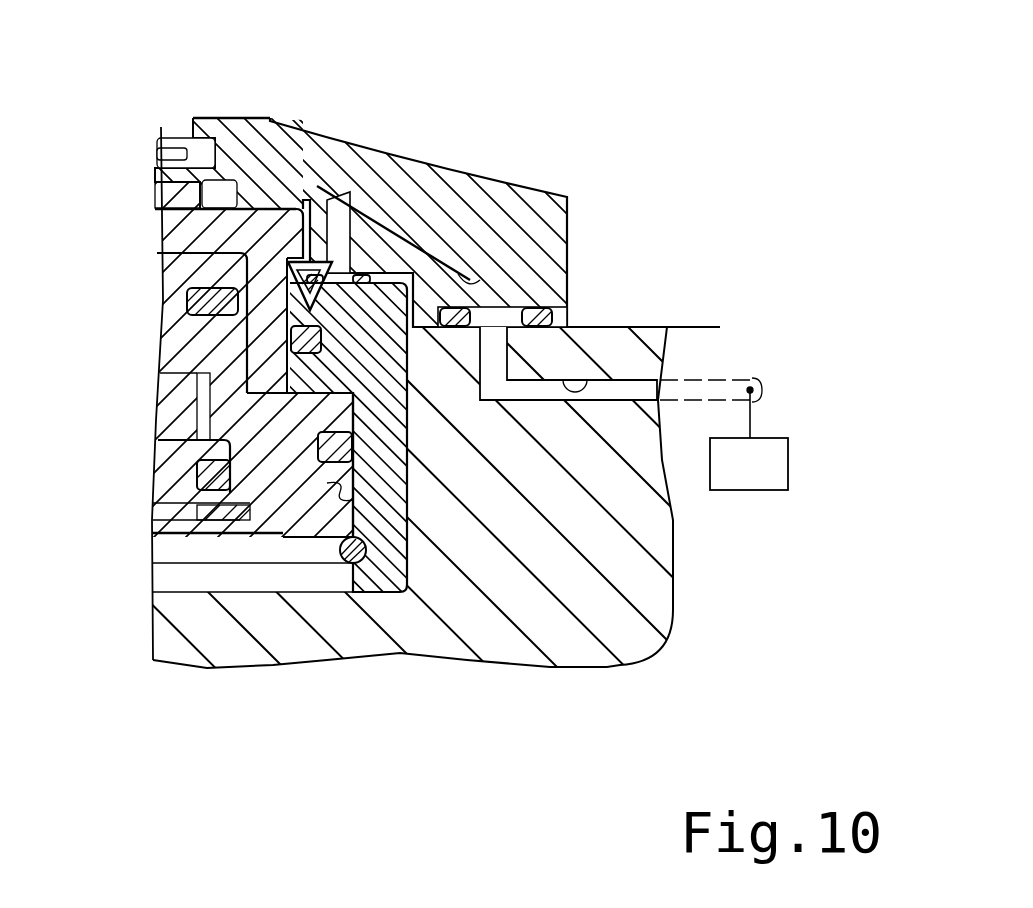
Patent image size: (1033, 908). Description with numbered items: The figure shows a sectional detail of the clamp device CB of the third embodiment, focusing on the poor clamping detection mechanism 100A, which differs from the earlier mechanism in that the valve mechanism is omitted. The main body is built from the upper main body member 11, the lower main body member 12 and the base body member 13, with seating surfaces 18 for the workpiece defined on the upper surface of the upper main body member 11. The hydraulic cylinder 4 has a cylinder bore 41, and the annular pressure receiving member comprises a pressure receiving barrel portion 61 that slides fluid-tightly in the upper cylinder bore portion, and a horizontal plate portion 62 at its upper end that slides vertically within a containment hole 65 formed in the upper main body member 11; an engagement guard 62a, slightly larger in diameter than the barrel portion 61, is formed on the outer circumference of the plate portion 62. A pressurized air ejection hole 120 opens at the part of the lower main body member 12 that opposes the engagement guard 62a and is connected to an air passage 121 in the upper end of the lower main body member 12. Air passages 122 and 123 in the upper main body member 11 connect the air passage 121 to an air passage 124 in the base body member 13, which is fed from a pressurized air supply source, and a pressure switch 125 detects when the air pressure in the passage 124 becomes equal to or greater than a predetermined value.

The hydraulic cylinder 4 is at (226, 571).
The upper main body member 11 is at (527, 187).
The lower main body member 12 is at (387, 521).
The base body member 13 is at (610, 572).
The seating surfaces 18 is at (280, 125).
The cylinder bore 41 is at (337, 515).
The pressure receiving barrel portion 61 is at (262, 345).
The horizontal plate portion 62 is at (175, 232).
The engagement guard 62a is at (295, 208).
The containment hole 65 is at (306, 207).
The poor clamping detection mechanism 100A is at (358, 190).
The pressurized air ejection hole 120 is at (303, 270).
The air passage 121 is at (385, 240).
The air passage 122 is at (352, 236).
The air passage 123 is at (467, 280).
The air passage 124 is at (603, 380).
The pressure switch 125 is at (750, 490).
The clamp device CB is at (658, 98).